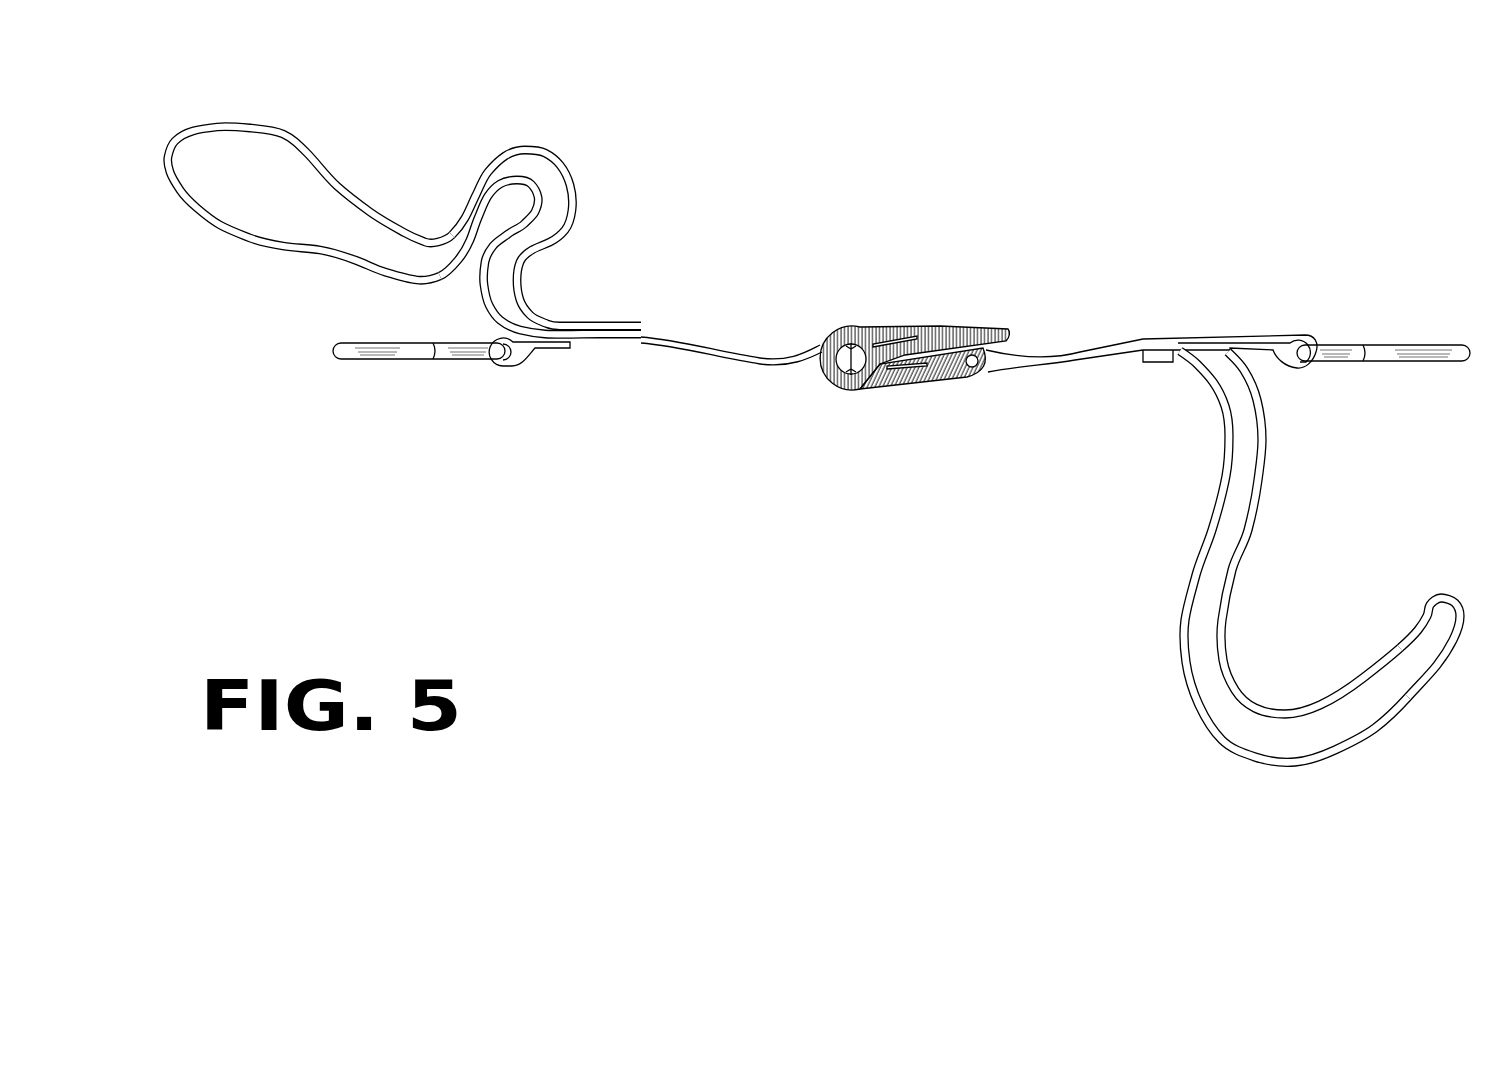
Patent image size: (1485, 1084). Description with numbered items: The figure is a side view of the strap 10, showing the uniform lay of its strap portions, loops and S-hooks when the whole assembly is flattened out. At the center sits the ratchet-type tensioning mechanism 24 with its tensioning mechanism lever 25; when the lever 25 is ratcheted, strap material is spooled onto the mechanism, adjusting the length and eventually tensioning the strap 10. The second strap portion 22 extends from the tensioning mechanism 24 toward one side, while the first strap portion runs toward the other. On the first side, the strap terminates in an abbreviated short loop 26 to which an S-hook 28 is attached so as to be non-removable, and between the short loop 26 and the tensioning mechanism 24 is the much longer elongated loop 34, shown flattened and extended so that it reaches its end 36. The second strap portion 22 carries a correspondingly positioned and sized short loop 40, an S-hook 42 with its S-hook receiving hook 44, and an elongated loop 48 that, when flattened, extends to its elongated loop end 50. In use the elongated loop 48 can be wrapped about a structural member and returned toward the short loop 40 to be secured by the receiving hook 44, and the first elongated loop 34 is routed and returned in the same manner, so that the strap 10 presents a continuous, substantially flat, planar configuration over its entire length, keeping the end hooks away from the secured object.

The strap 10 is at (1085, 247).
The second strap portion 22 is at (708, 358).
The ratchet-type tensioning mechanism 24 is at (933, 380).
The tensioning mechanism lever 25 is at (887, 327).
The short loop 26 is at (531, 356).
The S-hook 28 is at (432, 357).
The elongated loop 34 is at (548, 150).
The elongated loop end 36 is at (200, 124).
The short loop 40 is at (1265, 336).
The S-hook 42 is at (1340, 363).
The S-hook receiving hook 44 is at (1438, 363).
The elongated loop 48 is at (1230, 758).
The elongated loop end 50 is at (1452, 597).